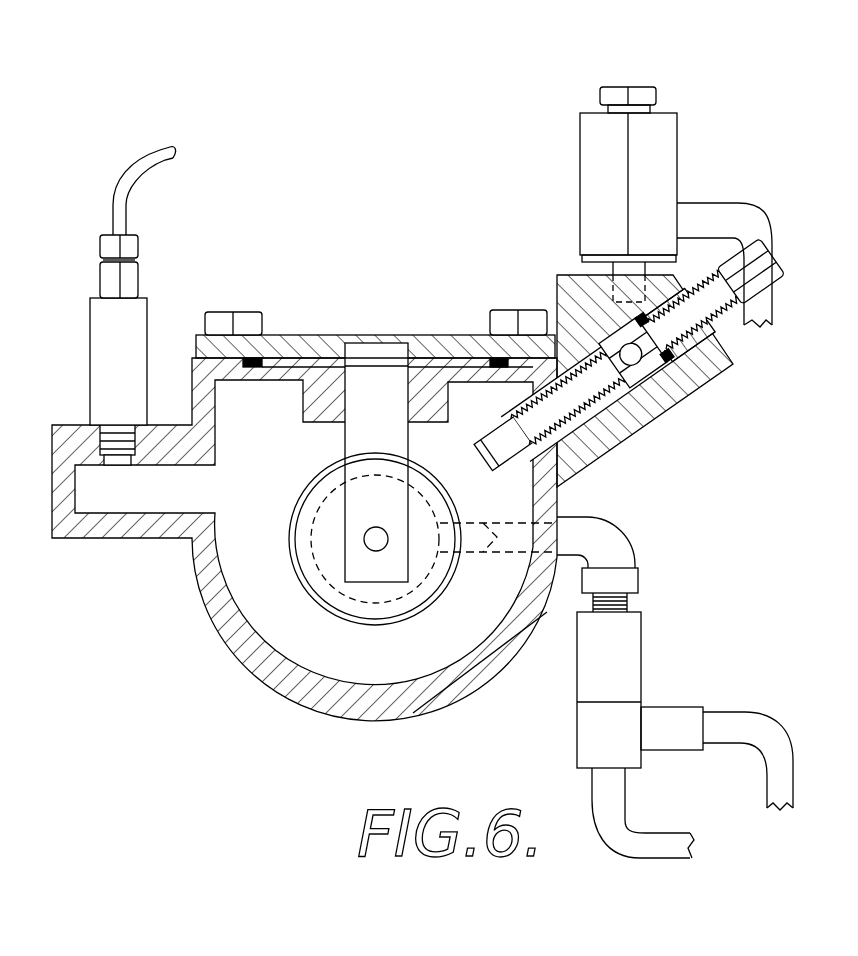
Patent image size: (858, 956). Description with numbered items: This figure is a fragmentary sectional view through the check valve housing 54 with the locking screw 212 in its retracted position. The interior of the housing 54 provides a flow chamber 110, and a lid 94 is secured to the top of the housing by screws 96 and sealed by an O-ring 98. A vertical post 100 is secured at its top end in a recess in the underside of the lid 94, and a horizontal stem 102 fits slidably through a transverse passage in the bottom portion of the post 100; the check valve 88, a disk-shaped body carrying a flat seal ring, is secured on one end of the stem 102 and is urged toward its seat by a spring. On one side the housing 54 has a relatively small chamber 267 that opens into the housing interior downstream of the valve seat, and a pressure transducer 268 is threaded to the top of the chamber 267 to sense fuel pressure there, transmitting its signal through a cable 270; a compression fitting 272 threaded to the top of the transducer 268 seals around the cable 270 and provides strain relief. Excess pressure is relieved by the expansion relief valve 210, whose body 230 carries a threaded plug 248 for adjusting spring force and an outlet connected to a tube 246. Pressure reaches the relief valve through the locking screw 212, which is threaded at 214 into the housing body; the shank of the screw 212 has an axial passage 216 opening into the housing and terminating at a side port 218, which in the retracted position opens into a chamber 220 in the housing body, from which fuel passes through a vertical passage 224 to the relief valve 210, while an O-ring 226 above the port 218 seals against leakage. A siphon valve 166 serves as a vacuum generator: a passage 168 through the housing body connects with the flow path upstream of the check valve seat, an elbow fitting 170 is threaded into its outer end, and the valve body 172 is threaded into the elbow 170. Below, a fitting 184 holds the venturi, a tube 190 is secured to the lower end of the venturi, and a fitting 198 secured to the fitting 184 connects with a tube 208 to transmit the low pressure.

The check valve housing 54 is at (414, 712).
The check valve 88 is at (318, 608).
The lid 94 is at (297, 340).
The screws 96 is at (240, 318).
The O-ring 98 is at (462, 338).
The vertical post 100 is at (355, 430).
The horizontal stem 102 is at (372, 538).
The flow chamber 110 is at (382, 660).
The siphon valve 166 is at (664, 708).
The passage 168 is at (497, 545).
The elbow fitting 170 is at (612, 535).
The valve body 172 is at (630, 648).
The fitting 184 is at (595, 737).
The tube 190 is at (645, 850).
The fitting 198 is at (688, 742).
The tube 208 is at (760, 725).
The expansion relief valve 210 is at (664, 196).
The locking screw 212 is at (755, 298).
The threads 214 is at (652, 407).
The axial passage 216 is at (478, 450).
The side port 218 is at (700, 340).
The chamber 220 is at (688, 375).
The vertical passage 224 is at (598, 308).
The O-ring 226 is at (705, 372).
The valve body 230 is at (582, 165).
The tube 246 is at (762, 230).
The threaded plug 248 is at (650, 92).
The chamber 267 is at (162, 503).
The pressure transducer 268 is at (100, 322).
The cable 270 is at (168, 155).
The compression fitting 272 is at (130, 275).